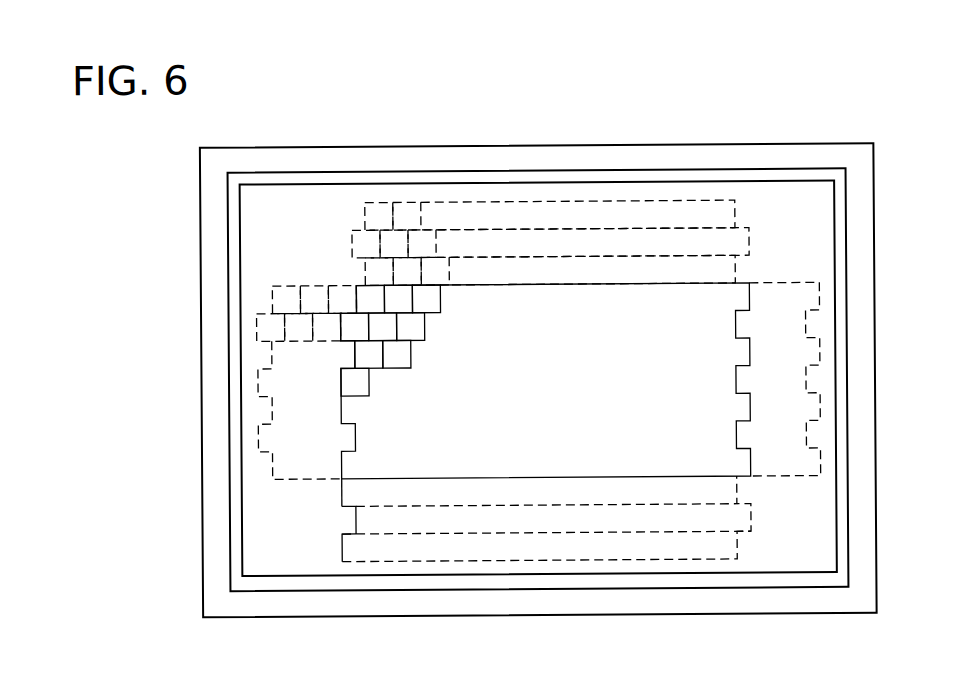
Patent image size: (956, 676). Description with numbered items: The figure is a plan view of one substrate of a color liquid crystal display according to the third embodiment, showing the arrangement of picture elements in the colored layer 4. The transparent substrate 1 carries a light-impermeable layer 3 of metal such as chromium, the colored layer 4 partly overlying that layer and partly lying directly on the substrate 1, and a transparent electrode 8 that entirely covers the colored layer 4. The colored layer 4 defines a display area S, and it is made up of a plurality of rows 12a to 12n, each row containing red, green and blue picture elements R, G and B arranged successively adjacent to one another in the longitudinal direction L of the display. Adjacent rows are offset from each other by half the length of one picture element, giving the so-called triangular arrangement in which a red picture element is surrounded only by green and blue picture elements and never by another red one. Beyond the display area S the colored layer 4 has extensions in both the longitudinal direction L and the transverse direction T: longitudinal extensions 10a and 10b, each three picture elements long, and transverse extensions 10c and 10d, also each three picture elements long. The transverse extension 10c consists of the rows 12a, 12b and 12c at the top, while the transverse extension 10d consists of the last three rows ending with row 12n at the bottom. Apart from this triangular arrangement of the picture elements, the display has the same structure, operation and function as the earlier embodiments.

The transparent substrate 1 is at (214, 290).
The light-impermeable layer 3 is at (234, 210).
The transparent electrode 8 is at (251, 266).
The colored layer 4 is at (383, 407).
The longitudinal extension 10a is at (339, 483).
The longitudinal extension 10b is at (824, 282).
The transverse extension 10c is at (498, 244).
The transverse extension 10d is at (393, 524).
The picture element row 12a is at (366, 212).
The picture element row 12b is at (356, 241).
The picture element row 12c is at (518, 271).
The picture element row 12n is at (341, 547).
The display area S is at (629, 281).
The longitudinal direction L is at (526, 124).
The transverse direction T is at (175, 365).